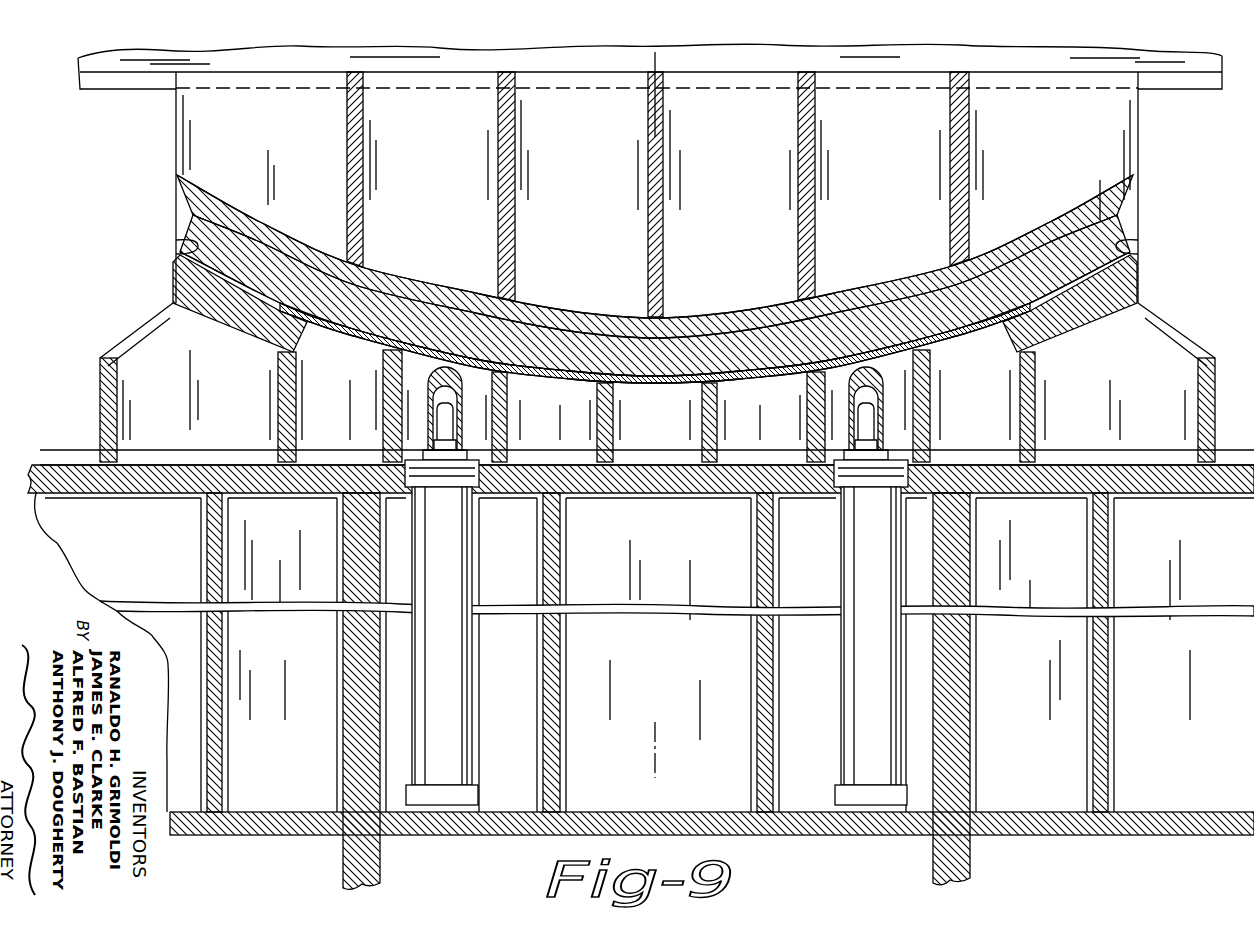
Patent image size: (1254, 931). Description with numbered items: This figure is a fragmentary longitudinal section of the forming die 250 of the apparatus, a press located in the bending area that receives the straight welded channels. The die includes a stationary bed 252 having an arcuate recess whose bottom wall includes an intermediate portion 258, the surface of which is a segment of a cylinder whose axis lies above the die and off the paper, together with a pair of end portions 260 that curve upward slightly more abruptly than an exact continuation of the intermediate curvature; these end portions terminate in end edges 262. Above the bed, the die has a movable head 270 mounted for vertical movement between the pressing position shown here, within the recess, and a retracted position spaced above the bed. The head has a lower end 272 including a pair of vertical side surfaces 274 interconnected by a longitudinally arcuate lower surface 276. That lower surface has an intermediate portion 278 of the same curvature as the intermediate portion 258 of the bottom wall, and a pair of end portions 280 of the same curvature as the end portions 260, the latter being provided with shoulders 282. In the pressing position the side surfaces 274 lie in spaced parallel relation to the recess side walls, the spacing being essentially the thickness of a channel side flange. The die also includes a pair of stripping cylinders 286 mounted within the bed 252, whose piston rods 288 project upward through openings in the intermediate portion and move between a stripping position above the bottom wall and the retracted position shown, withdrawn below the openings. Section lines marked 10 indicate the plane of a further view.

The section line 10 is at (686, 59).
The forming die 250 is at (166, 220).
The stationary bed 252 is at (98, 370).
The intermediate portion 258 is at (678, 380).
The end portions 260 is at (180, 246).
The end edges 262 is at (175, 262).
The movable head 270 is at (168, 112).
The lower end 272 is at (365, 313).
The vertical side surfaces 274 is at (590, 361).
The lower surface 276 is at (522, 368).
The intermediate portion 278 is at (628, 372).
The end portions 280 is at (200, 242).
The shoulders 282 is at (190, 200).
The stripping cylinders 286 is at (445, 550).
The piston rods 288 is at (447, 427).